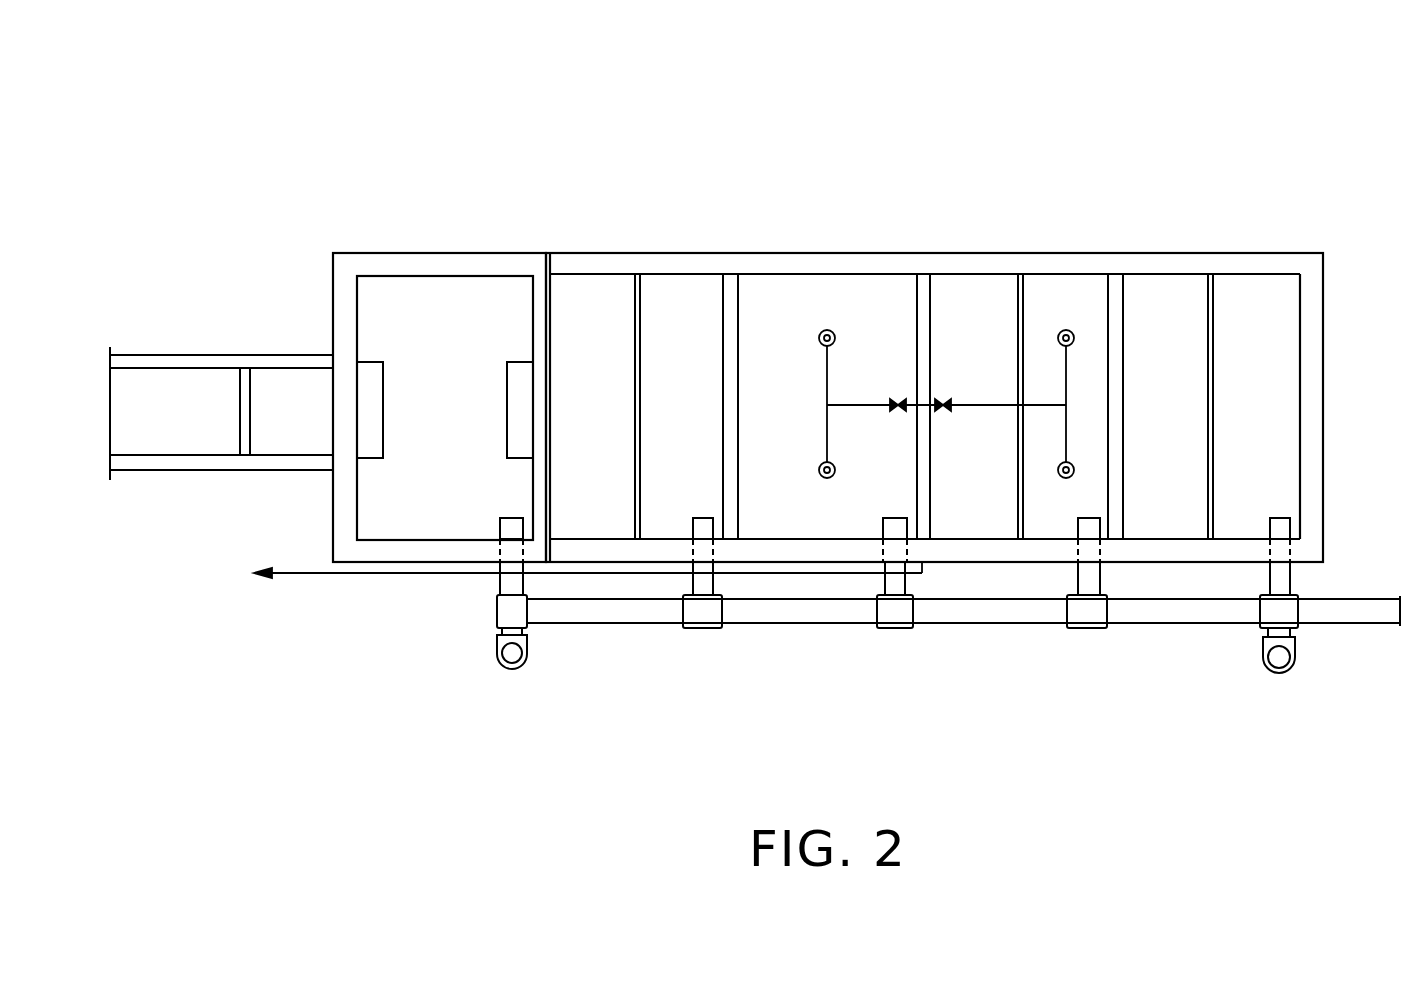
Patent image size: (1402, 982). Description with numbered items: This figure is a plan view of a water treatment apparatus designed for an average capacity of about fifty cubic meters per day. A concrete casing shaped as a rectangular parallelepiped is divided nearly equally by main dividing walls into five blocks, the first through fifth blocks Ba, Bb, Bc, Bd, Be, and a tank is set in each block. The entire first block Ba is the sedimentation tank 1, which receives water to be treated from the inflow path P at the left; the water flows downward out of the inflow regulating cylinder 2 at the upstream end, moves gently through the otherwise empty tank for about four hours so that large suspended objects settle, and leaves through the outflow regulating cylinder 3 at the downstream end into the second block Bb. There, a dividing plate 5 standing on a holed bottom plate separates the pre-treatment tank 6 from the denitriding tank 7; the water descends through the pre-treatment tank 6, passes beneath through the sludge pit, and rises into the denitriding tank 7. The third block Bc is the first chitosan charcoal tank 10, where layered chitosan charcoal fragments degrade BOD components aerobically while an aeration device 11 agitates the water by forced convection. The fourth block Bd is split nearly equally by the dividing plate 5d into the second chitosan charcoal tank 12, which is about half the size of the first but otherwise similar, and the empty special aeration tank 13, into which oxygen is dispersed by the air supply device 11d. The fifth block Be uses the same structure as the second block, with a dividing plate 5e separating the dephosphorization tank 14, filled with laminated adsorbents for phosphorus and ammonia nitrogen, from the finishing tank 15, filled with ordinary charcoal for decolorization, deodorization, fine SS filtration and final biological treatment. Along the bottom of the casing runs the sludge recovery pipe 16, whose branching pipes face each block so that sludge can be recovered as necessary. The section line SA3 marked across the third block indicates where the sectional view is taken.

The sedimentation tank 1 is at (407, 293).
The inflow regulating cylinder 2 is at (372, 458).
The outflow regulating cylinder 3 is at (505, 447).
The partition wall 5 is at (632, 500).
The dividing plate 5d is at (1016, 518).
The partition wall 5e is at (1203, 517).
The pre-treatment tank 6 is at (592, 292).
The denitriding tank 7 is at (698, 292).
The first chitosan charcoal tank 10 is at (778, 293).
The pipe assembly with valves 11 is at (820, 480).
The air supply device 11d is at (1063, 478).
The second chitosan charcoal tank 12 is at (988, 293).
The special aeration tank 13 is at (1090, 293).
The dephosphorization tank 14 is at (1168, 288).
The finishing tank 15 is at (1275, 290).
The sludge recovery pipe 16 is at (815, 612).
The inflow path P is at (182, 438).
The first block Ba is at (472, 226).
The second block Bb is at (674, 230).
The third block Bc is at (834, 228).
The fourth block Bd is at (1053, 224).
The fifth block Be is at (1230, 226).
The section line SA3 is at (908, 245).